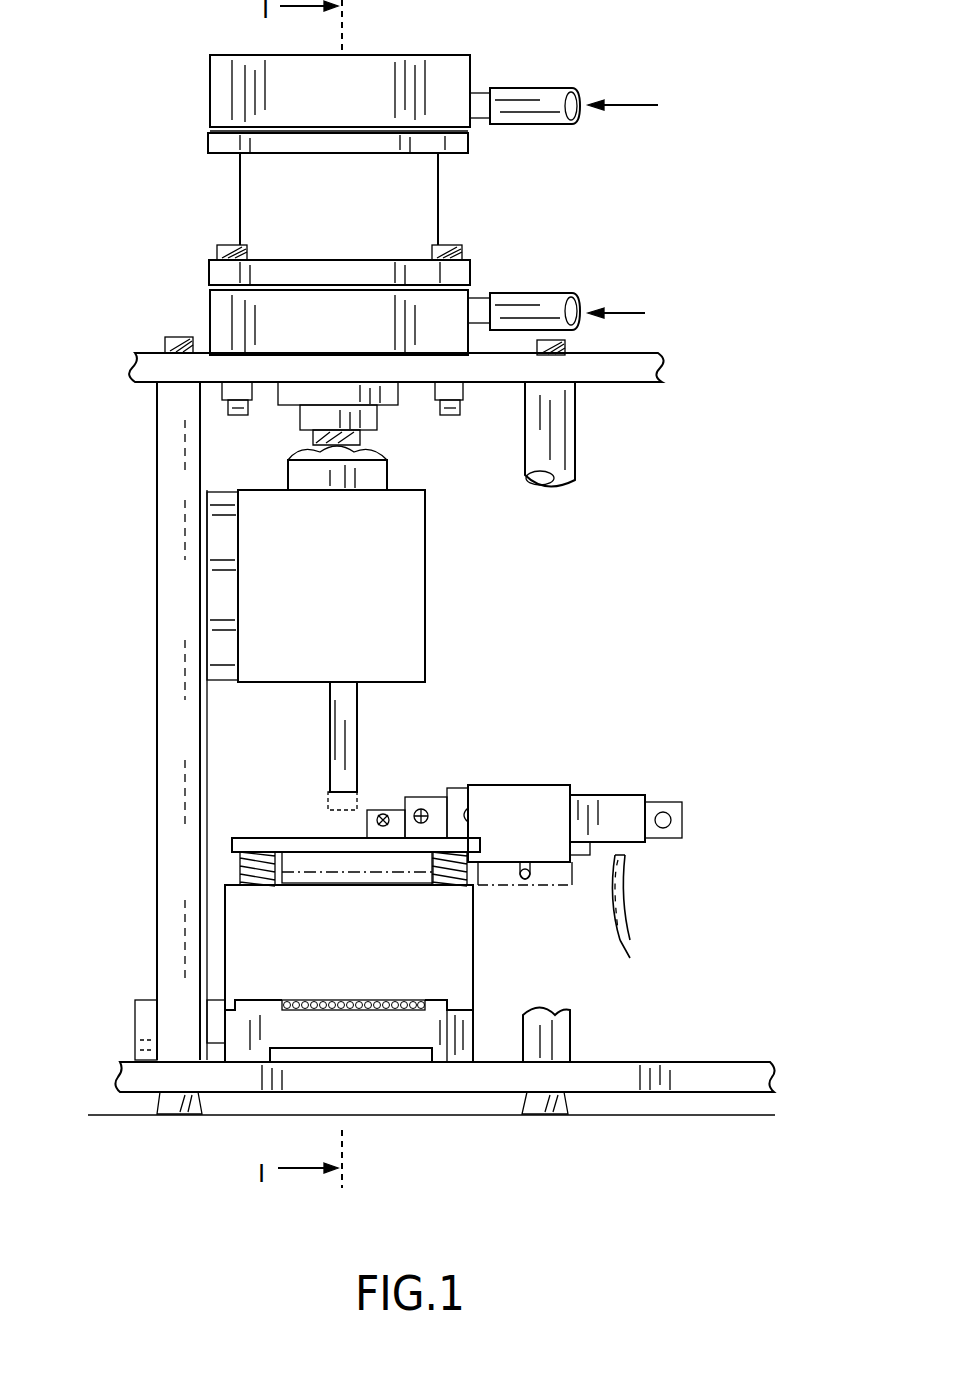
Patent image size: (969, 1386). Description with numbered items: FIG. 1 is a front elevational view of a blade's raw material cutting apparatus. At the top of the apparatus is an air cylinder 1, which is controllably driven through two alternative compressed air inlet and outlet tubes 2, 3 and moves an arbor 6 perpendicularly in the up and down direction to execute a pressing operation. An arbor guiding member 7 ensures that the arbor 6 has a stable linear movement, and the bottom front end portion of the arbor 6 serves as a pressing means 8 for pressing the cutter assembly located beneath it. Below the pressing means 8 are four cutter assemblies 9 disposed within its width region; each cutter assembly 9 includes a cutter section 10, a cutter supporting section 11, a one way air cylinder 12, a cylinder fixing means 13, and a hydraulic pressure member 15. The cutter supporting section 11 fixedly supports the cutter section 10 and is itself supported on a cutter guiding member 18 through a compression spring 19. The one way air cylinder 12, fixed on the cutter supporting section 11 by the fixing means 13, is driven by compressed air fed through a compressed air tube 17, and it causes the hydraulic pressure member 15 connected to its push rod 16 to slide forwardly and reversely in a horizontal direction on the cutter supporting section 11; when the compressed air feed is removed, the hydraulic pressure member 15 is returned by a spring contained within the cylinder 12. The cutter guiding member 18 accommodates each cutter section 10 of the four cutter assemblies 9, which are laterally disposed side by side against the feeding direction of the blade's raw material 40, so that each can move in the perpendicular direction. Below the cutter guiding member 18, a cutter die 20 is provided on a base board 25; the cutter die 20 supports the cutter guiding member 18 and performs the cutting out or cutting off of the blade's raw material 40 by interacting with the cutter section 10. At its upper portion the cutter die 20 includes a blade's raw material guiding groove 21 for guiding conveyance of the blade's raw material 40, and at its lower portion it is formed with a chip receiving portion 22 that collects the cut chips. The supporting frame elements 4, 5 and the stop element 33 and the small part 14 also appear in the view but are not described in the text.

The air cylinder 1 is at (256, 198).
The compressed air inlet and outlet tube 2 is at (540, 88).
The compressed air inlet and outlet tube 3 is at (525, 298).
The frame plate 4 is at (706, 366).
The frame pipes 5 is at (577, 445).
The arbor 6 is at (388, 470).
The arbor guiding member 7 is at (413, 578).
The pressing means 8 is at (358, 716).
The cutter assembly 9 is at (278, 822).
The cutter section 10 is at (316, 880).
The cutter supporting section 11 is at (325, 850).
The one way air cylinder 12 is at (618, 806).
The cylinder fixing means 13 is at (510, 797).
The screw 14 is at (530, 876).
The hydraulic pressure member 15 is at (390, 810).
The push rod 16 is at (440, 800).
The compressed air tube 17 is at (628, 870).
The cutter guiding member 18 is at (462, 946).
The compression spring 19 is at (468, 866).
The cutter die 20 is at (458, 1046).
The blade's raw material guiding groove 21 is at (315, 1002).
The chip receiving portion 22 is at (398, 1062).
The base board 25 is at (708, 1078).
The stop block 33 is at (140, 1012).
The blade's raw material 40 is at (367, 1002).